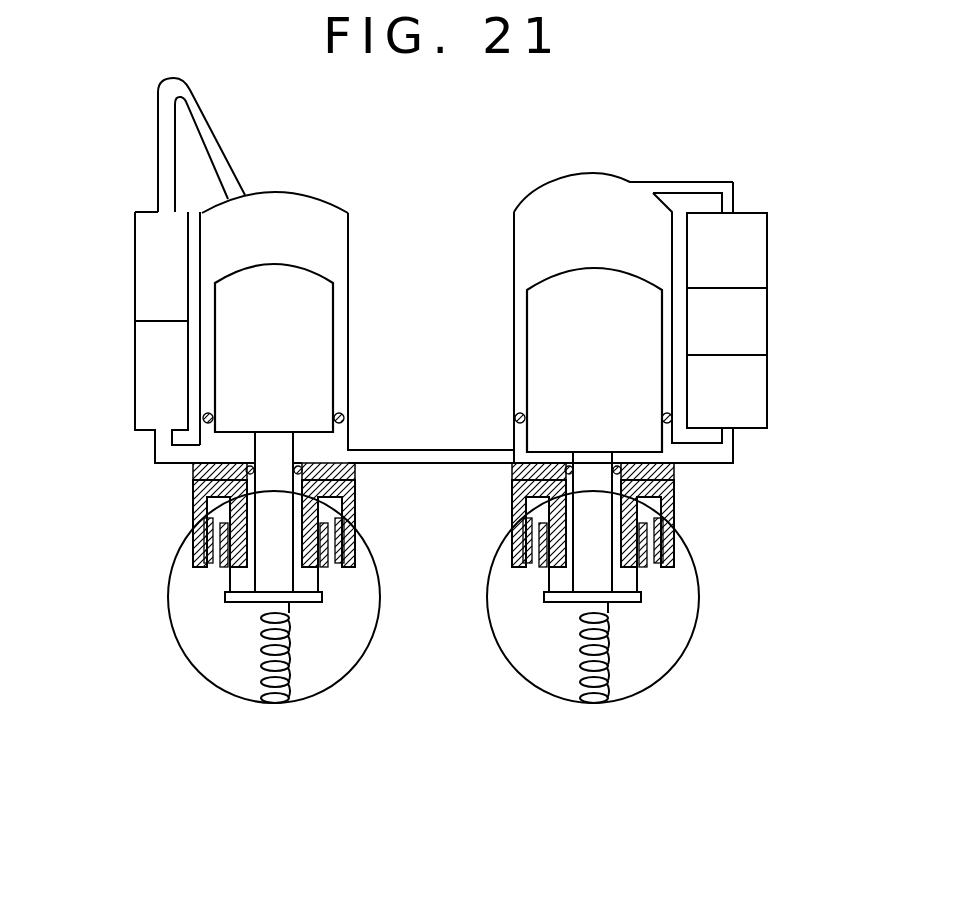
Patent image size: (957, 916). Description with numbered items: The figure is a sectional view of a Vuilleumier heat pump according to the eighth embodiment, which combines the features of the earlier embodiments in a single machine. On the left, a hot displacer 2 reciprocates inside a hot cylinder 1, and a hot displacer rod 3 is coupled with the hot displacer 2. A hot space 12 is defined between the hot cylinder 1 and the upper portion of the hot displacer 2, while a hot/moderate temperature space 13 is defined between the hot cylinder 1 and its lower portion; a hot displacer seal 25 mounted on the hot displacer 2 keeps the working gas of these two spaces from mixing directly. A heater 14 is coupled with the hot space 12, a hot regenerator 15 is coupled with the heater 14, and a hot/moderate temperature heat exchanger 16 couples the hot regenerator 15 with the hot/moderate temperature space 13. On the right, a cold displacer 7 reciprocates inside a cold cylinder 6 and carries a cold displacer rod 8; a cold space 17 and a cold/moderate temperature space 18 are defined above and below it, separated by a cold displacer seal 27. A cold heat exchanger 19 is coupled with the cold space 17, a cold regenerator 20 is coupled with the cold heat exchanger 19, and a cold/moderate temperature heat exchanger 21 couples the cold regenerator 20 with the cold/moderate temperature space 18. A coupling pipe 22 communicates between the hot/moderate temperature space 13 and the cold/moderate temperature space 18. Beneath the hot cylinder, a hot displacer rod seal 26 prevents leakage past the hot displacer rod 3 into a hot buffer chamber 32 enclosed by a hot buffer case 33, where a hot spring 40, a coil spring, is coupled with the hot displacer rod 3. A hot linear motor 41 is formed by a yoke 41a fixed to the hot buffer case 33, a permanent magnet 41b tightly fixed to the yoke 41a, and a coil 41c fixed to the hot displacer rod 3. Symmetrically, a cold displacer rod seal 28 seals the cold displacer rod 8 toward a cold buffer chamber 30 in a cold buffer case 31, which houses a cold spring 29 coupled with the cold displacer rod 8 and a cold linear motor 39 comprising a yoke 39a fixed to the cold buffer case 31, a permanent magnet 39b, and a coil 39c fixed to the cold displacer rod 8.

The hot cylinder 1 is at (348, 240).
The hot displacer 2 is at (318, 320).
The hot displacer rod 3 is at (273, 447).
The cold cylinder 6 is at (514, 233).
The cold displacer 7 is at (540, 323).
The cold displacer rod 8 is at (597, 470).
The hot space 12 is at (318, 214).
The hot/moderate temperature space 13 is at (323, 453).
The heater 14 is at (158, 150).
The hot regenerator 15 is at (135, 276).
The hot/moderate temperature heat exchanger 16 is at (135, 390).
The cold space 17 is at (552, 195).
The cold/moderate temperature space 18 is at (522, 447).
The cold heat exchanger 19 is at (745, 253).
The cold regenerator 20 is at (745, 330).
The cold/moderate temperature heat exchanger 21 is at (745, 405).
The coupling pipe 22 is at (383, 464).
The hot displacer seal 25 is at (345, 418).
The hot displacer rod seal 26 is at (193, 473).
The cold displacer seal 27 is at (672, 417).
The cold displacer rod seal 28 is at (515, 473).
The cold spring 29 is at (615, 665).
The cold buffer chamber 30 is at (525, 630).
The cold buffer case 31 is at (555, 702).
The hot buffer chamber 32 is at (208, 660).
The hot buffer case 33 is at (242, 700).
The cold linear motor 39 is at (720, 650).
The yoke 39a is at (675, 508).
The permanent magnet 39b is at (675, 550).
The coil 39c is at (640, 596).
The hot spring 40 is at (287, 657).
The hot linear motor 41 is at (140, 657).
The yoke 41a is at (193, 515).
The permanent magnet 41b is at (200, 545).
The coil 41c is at (222, 567).